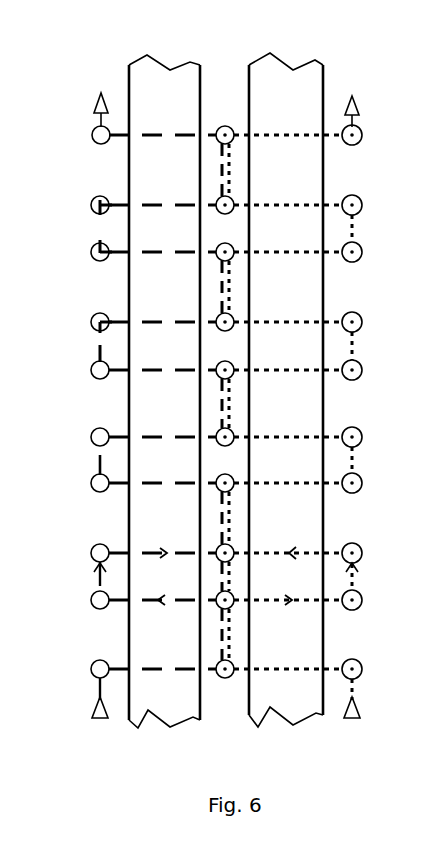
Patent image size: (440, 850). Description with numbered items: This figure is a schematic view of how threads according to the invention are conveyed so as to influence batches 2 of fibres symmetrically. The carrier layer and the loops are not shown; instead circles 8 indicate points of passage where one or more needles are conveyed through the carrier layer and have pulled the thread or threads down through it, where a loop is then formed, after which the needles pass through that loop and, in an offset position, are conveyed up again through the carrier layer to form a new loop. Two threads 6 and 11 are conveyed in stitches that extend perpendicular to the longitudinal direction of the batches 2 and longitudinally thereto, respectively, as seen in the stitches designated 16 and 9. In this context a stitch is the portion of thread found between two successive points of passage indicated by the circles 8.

The batches 2 is at (265, 92).
The thread 6 is at (95, 688).
The circles 8 is at (231, 200).
The stitch 9 is at (97, 348).
The thread 11 is at (357, 688).
The stitch 16 is at (146, 368).